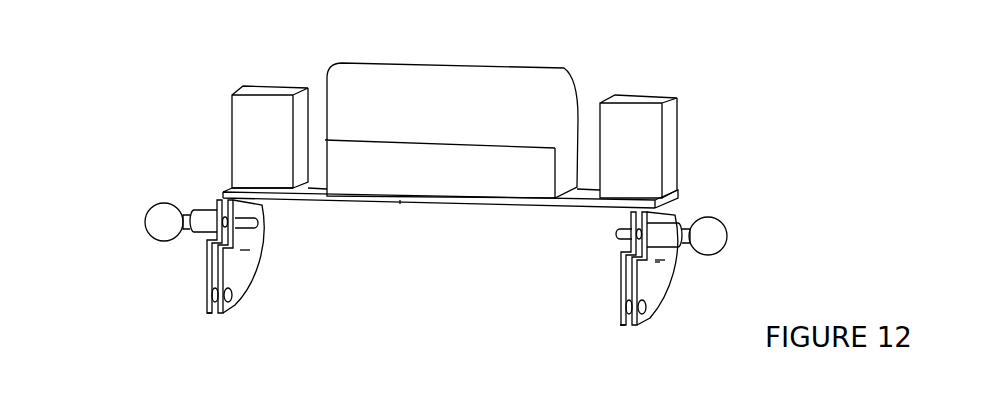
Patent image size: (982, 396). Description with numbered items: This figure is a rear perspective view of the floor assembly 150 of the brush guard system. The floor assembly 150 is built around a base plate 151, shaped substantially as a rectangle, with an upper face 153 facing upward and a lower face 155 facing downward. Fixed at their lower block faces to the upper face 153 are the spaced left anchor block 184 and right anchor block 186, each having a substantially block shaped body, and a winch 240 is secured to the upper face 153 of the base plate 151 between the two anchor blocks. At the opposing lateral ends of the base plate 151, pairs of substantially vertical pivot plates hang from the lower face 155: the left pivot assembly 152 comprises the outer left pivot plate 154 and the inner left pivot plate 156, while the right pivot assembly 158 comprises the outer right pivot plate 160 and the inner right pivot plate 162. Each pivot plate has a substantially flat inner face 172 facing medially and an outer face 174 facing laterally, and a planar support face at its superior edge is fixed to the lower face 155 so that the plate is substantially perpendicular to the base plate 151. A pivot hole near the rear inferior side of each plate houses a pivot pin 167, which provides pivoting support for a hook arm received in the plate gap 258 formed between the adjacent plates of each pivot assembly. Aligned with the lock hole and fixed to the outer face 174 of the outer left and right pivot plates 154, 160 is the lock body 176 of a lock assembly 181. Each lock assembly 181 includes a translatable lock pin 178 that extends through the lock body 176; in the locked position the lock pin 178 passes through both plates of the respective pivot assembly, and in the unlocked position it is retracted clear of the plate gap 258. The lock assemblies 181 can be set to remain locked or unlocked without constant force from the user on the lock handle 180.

The floor assembly 150 is at (461, 209).
The base plate 151 is at (475, 208).
The left pivot assembly 152 is at (263, 283).
The upper face 153 is at (583, 195).
The outer left pivot plate 154 is at (202, 270).
The lower face 155 is at (404, 203).
The inner left pivot plate 156 is at (260, 260).
The right pivot assembly 158 is at (687, 283).
The outer right pivot plate 160 is at (667, 300).
The inner right pivot plate 162 is at (617, 277).
The pivot pin 167 is at (233, 300).
The inner face 172 is at (247, 247).
The outer face 174 is at (655, 267).
The lock body 176 is at (654, 220).
The lock pin 178 is at (258, 221).
The lock handle 180 is at (147, 210).
The lock assembly 181 is at (198, 204).
The left anchor block 184 is at (230, 117).
The right anchor block 186 is at (680, 130).
The winch 240 is at (460, 62).
The plate gap 258 is at (212, 322).